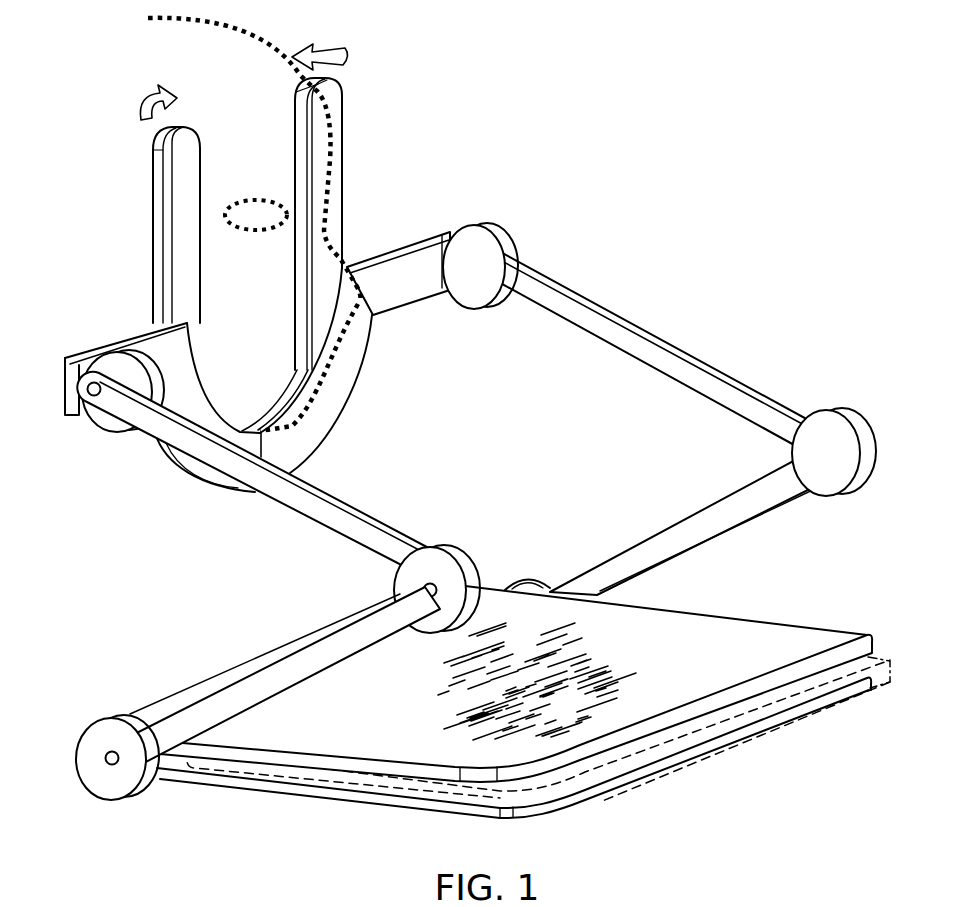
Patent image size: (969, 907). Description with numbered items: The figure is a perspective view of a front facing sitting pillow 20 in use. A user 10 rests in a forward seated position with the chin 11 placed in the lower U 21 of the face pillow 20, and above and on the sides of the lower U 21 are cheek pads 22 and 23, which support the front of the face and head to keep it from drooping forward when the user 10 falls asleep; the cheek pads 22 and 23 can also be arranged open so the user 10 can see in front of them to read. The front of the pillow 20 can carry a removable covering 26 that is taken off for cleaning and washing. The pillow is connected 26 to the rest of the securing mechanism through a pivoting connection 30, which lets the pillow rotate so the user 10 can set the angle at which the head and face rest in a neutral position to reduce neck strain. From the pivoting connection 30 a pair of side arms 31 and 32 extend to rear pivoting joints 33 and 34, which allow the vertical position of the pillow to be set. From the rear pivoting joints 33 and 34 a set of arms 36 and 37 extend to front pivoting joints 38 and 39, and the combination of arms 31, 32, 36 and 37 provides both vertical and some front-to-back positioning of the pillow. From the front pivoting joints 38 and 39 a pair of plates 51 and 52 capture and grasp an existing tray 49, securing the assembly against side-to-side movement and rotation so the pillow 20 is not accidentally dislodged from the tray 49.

The user 10 is at (330, 168).
The chin 11 is at (298, 422).
The front facing pillow 20 is at (622, 122).
The lower U 21 is at (244, 428).
The cheek pad 22 is at (295, 118).
The cheek pad 23 is at (152, 190).
The removable covering 26 is at (405, 242).
The pivoting connection 30 is at (507, 227).
The side arm 31 is at (288, 513).
The side arm 32 is at (615, 310).
The rear pivoting joint 33 is at (450, 543).
The rear pivoting joint 34 is at (827, 410).
The arm 36 is at (727, 532).
The arm 37 is at (347, 622).
The front pivoting joint 38 is at (530, 580).
The front pivoting joint 39 is at (95, 723).
The existing tray 49 is at (797, 715).
The plate 51 is at (710, 610).
The plate 52 is at (297, 795).